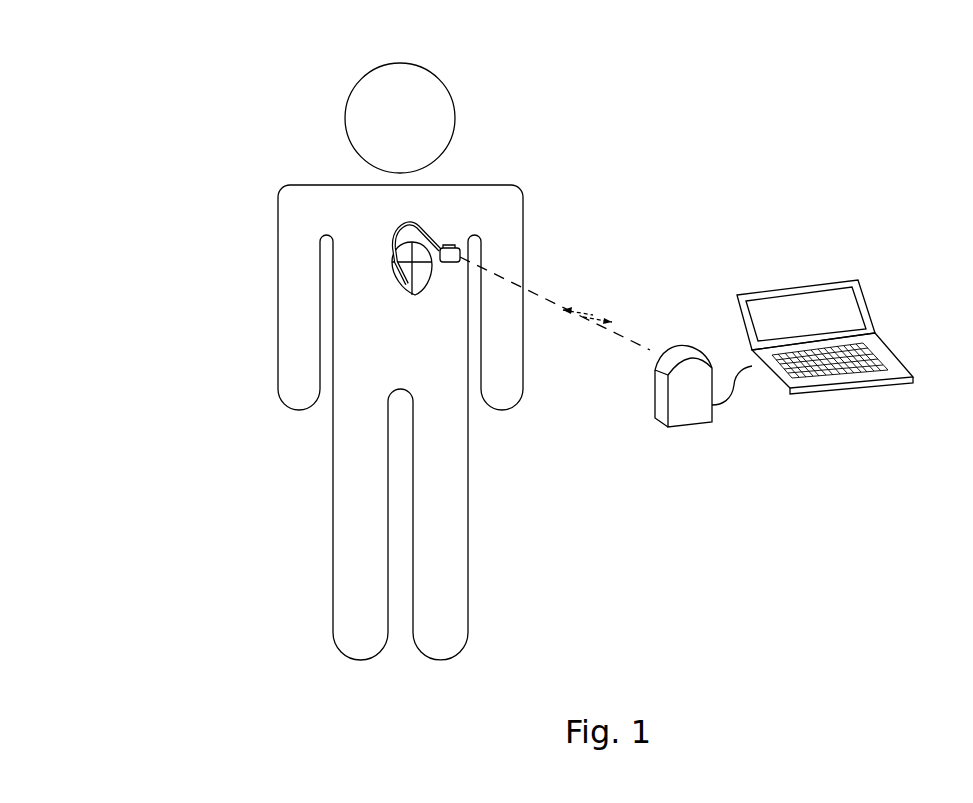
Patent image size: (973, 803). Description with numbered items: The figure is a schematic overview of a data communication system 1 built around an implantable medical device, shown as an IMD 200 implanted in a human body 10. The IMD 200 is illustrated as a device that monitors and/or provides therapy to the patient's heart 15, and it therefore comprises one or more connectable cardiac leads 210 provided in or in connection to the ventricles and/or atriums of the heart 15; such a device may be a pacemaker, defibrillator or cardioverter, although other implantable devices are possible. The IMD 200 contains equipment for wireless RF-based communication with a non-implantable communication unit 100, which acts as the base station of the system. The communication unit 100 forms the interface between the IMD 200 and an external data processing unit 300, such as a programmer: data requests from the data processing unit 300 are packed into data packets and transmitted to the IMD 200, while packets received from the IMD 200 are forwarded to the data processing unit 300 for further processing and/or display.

The data communication system 1 is at (190, 59).
The human body 10 is at (520, 185).
The heart 15 is at (415, 297).
The communication unit 100 is at (665, 424).
The implantable medical device 200 is at (449, 245).
The cardiac lead 210 is at (396, 238).
The data processing unit 300 is at (898, 360).